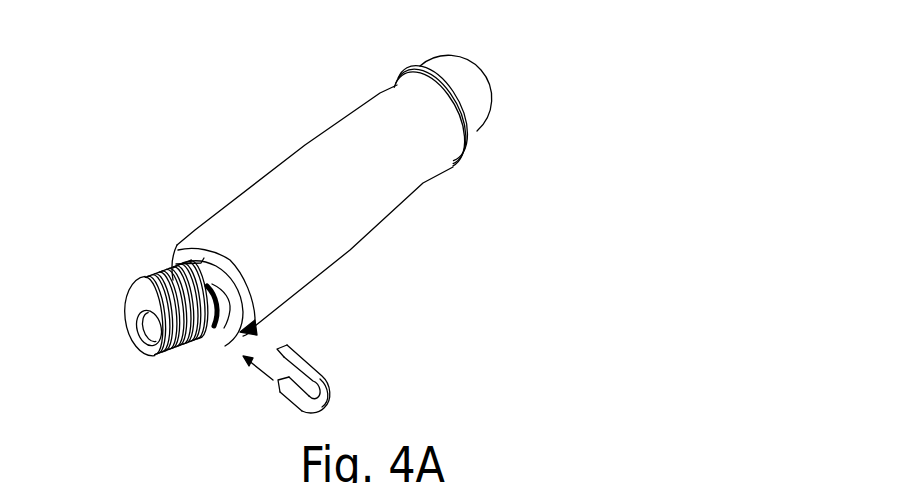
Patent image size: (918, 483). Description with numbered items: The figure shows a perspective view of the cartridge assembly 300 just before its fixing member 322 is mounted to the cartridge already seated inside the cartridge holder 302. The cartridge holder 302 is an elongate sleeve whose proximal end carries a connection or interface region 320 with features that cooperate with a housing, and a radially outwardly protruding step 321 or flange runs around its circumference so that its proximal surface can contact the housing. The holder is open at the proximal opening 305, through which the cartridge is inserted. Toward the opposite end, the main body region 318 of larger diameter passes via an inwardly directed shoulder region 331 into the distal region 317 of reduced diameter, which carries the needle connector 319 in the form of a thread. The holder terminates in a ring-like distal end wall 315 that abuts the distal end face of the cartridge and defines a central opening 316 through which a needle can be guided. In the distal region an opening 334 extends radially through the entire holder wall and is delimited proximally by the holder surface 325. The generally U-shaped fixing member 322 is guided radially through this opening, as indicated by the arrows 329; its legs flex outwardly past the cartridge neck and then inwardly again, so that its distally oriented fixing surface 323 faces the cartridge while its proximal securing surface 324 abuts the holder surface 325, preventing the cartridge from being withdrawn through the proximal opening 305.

The cartridge assembly 300 is at (610, 471).
The cartridge holder 302 is at (332, 148).
The opening 305 is at (506, 65).
The distal end wall 315 is at (133, 315).
The opening 316 is at (153, 337).
The distal region 317 is at (158, 292).
The main body region 318 is at (283, 178).
The needle connector 319 is at (202, 347).
The connection or interface region 320 is at (478, 116).
The step 321 is at (414, 72).
The fixing member 322 is at (320, 380).
The fixing surface 323 is at (283, 393).
The securing surface 324 is at (328, 403).
The holder surface 325 is at (210, 292).
The arrow 329 is at (258, 330).
The shoulder region 331 is at (192, 252).
The opening 334 is at (220, 333).